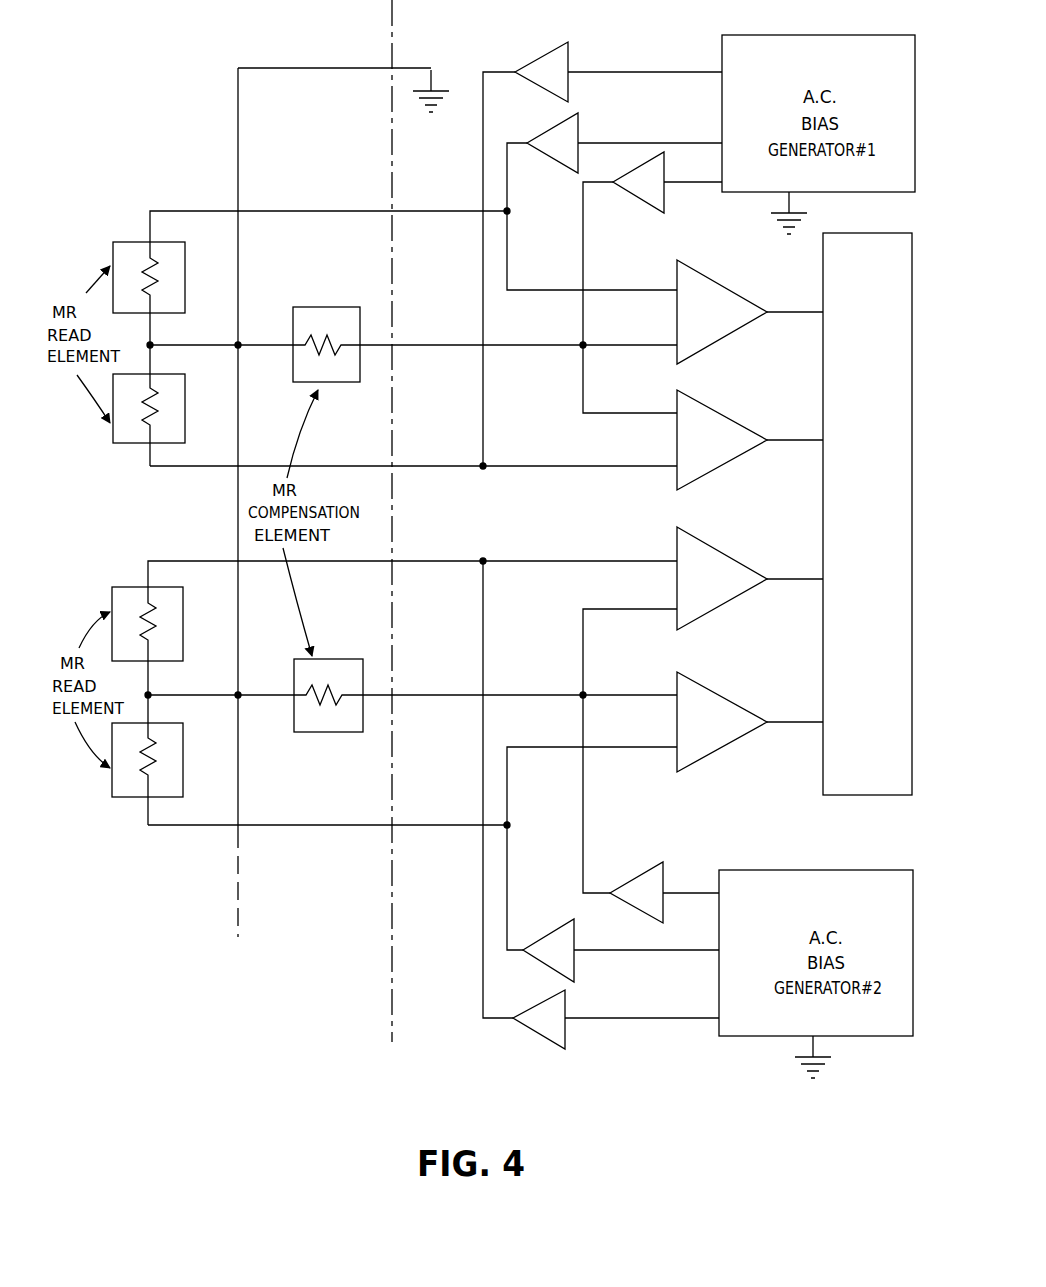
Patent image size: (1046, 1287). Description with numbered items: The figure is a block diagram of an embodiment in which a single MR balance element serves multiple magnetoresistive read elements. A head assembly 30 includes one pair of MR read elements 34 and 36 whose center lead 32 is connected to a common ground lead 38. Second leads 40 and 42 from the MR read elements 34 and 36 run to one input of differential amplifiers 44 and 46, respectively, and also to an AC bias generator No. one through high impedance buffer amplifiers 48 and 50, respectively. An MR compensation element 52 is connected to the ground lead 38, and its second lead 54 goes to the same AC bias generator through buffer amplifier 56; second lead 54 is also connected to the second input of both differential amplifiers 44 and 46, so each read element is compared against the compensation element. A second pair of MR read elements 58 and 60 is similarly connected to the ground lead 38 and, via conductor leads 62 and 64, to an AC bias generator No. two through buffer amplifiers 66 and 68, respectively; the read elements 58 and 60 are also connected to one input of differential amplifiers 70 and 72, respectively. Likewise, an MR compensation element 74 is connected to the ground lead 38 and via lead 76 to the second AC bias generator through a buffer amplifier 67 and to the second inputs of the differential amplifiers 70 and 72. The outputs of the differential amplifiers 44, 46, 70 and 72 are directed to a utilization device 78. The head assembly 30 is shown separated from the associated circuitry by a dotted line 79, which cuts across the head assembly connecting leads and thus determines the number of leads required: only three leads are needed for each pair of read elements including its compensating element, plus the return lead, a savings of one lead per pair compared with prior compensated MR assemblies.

The head assembly 30 is at (249, 49).
The dotted line 79 is at (393, 24).
The common ground lead 38 is at (238, 138).
The second lead 40 is at (270, 211).
The MR read element 34 is at (130, 242).
The center lead 32 is at (184, 345).
The MR read element 36 is at (133, 443).
The second lead 42 is at (170, 466).
The MR compensation element 52 is at (313, 307).
The second lead 54 is at (505, 345).
The high impedance buffer amplifier 50 is at (568, 60).
The high impedance buffer amplifier 48 is at (578, 140).
The buffer amplifier 56 is at (664, 188).
The differential amplifier 44 is at (727, 290).
The differential amplifier 46 is at (727, 425).
The differential amplifier 70 is at (727, 561).
The differential amplifier 72 is at (727, 707).
The utilization device 78 is at (846, 795).
The conductor lead 62 is at (345, 561).
The MR read element 58 is at (183, 627).
The lead 76 is at (505, 695).
The MR read element 60 is at (183, 773).
The conductor lead 64 is at (262, 825).
The MR compensation element 74 is at (312, 732).
The buffer amplifier 67 is at (642, 878).
The buffer amplifier 68 is at (572, 963).
The buffer amplifier 66 is at (532, 1025).